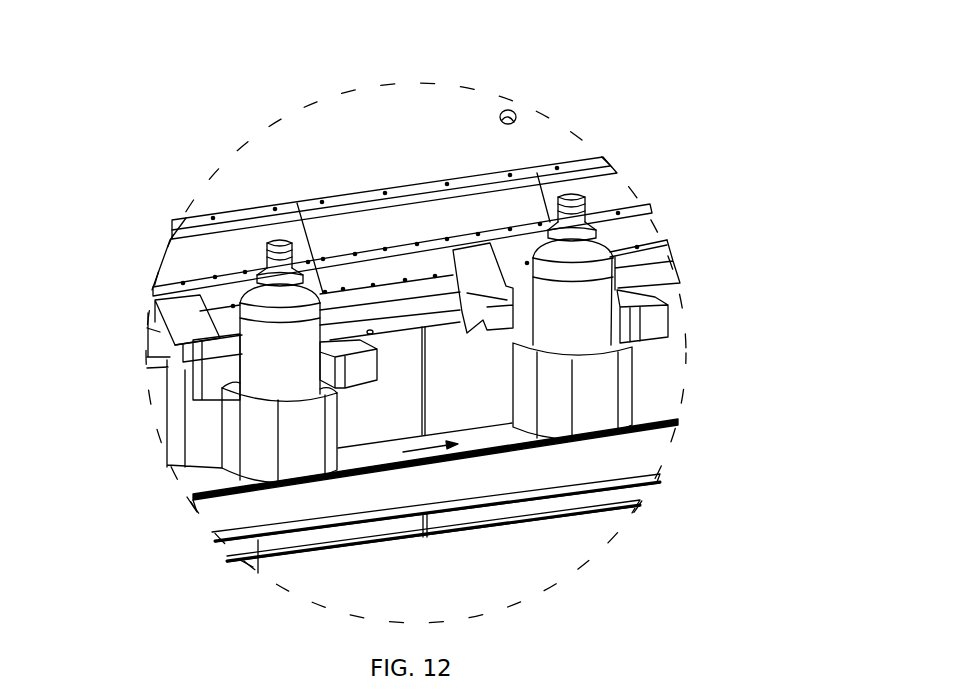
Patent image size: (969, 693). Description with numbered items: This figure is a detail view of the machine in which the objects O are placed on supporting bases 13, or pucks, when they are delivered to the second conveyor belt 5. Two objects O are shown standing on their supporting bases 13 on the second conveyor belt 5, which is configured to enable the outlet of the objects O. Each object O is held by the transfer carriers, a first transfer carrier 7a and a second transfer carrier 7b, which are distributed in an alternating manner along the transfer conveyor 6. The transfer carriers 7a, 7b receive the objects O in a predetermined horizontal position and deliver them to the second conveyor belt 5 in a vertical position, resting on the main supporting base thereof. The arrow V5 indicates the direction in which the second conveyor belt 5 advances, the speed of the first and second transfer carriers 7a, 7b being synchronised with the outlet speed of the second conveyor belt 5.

The transfer conveyor 6 is at (417, 180).
The object O is at (242, 280).
The supporting base 13 is at (243, 440).
The first transfer carrier 7a is at (362, 390).
The second transfer carrier 7b is at (187, 370).
The second conveyor belt 5 is at (468, 455).
The conveying direction V5 is at (435, 440).